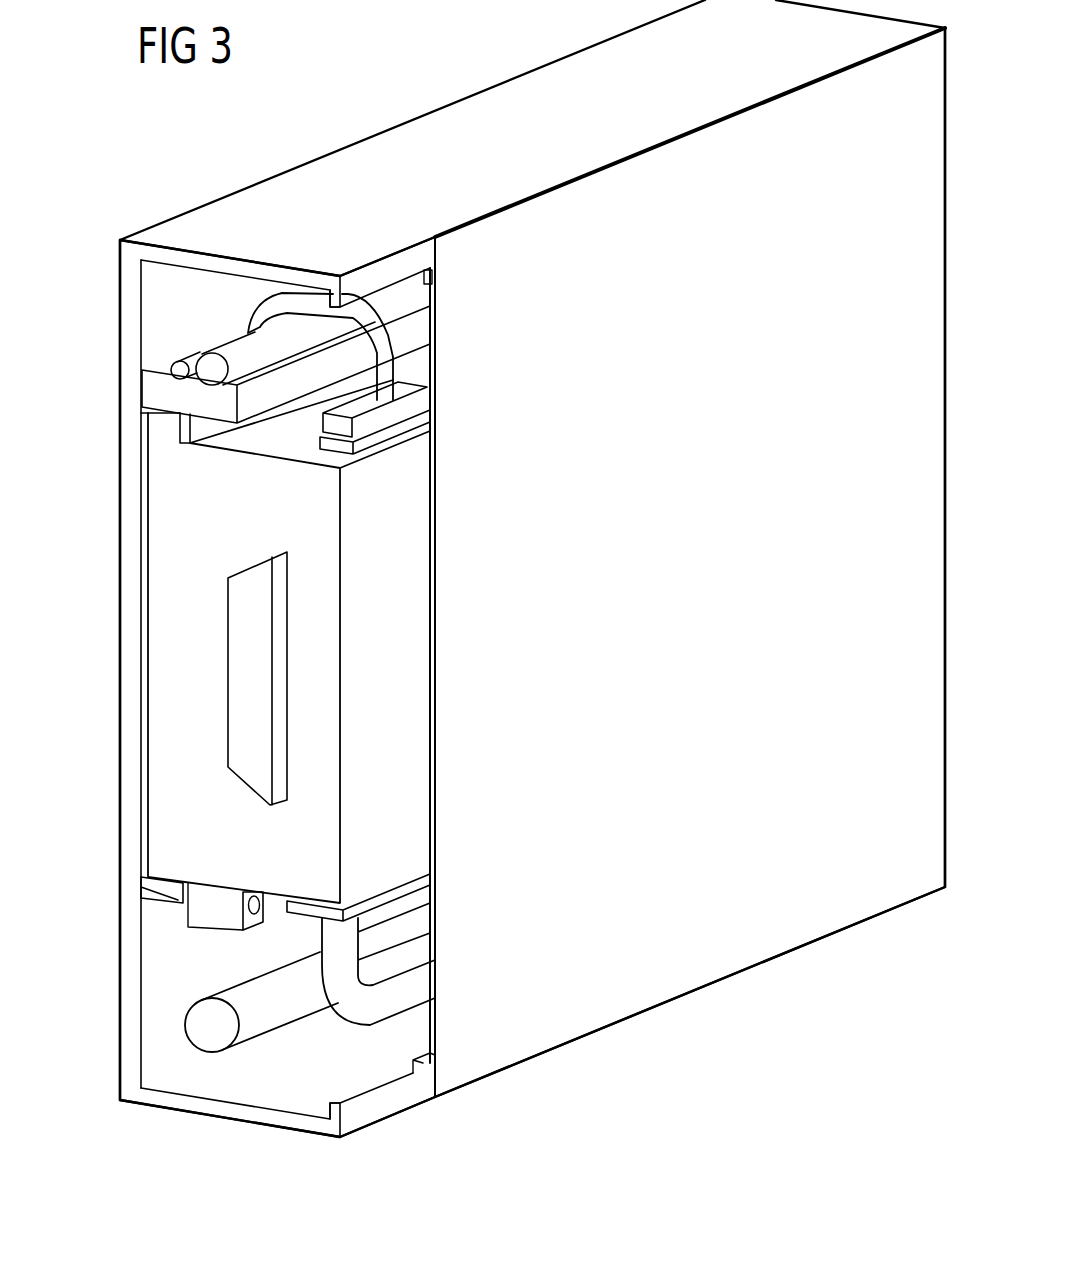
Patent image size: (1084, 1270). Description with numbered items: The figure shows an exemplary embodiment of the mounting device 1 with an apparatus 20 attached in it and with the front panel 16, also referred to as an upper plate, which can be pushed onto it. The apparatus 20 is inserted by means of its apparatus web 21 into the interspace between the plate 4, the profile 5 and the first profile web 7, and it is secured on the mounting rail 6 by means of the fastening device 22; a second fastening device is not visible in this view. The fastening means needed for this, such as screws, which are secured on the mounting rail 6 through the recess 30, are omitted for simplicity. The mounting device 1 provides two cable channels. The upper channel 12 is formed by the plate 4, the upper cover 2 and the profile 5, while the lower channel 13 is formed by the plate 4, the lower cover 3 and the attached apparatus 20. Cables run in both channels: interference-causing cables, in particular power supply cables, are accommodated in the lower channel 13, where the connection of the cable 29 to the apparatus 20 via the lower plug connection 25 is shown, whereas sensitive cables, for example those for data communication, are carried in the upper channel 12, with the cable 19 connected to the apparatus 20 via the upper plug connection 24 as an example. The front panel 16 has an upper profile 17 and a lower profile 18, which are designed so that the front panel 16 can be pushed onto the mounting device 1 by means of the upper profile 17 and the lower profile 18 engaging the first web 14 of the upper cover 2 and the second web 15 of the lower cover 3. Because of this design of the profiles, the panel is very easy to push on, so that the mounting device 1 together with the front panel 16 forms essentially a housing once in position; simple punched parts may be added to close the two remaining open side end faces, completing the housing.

The mounting device 1 is at (352, 135).
The upper cover 2 is at (557, 92).
The lower cover 3 is at (262, 1090).
The plate 4 is at (127, 552).
The profile 5 is at (143, 393).
The mounting rail 6 is at (141, 902).
The first profile web 7 is at (183, 443).
The upper channel 12 is at (158, 284).
The lower channel 13 is at (160, 996).
The first web 14 is at (334, 274).
The second web 15 is at (347, 1122).
The front panel 16 is at (856, 888).
The upper profile 17 is at (428, 282).
The lower profile 18 is at (430, 1063).
The cable 19 is at (389, 366).
The apparatus 20 is at (131, 654).
The apparatus web 21 is at (165, 428).
The fastening device 22 is at (215, 906).
The upper plug connection 24 is at (401, 428).
The lower plug connection 25 is at (377, 892).
The cable 29 is at (362, 975).
The recess 30 is at (257, 922).